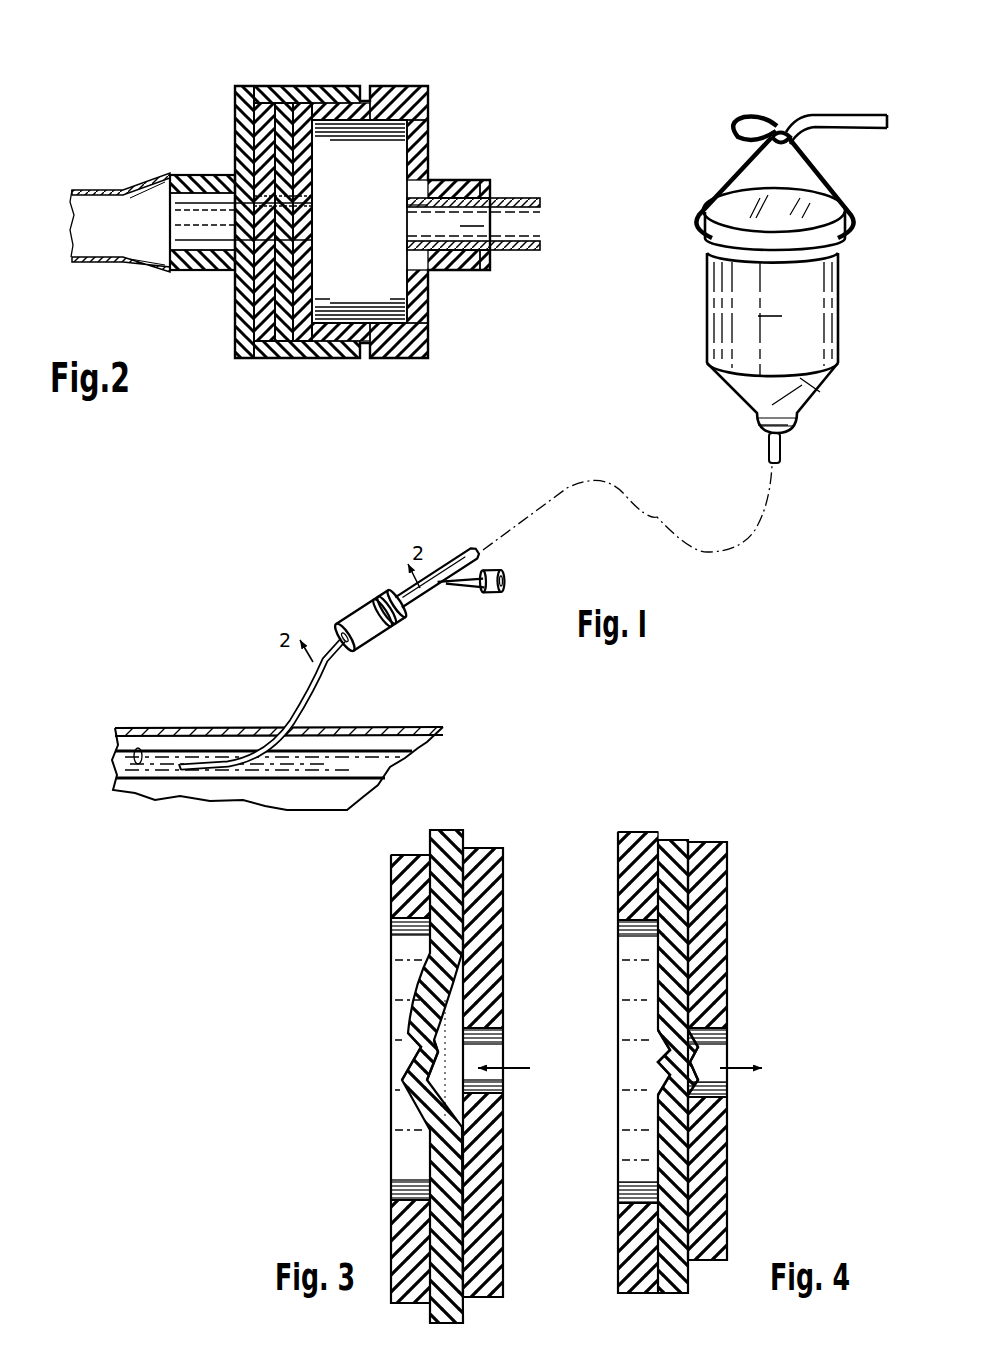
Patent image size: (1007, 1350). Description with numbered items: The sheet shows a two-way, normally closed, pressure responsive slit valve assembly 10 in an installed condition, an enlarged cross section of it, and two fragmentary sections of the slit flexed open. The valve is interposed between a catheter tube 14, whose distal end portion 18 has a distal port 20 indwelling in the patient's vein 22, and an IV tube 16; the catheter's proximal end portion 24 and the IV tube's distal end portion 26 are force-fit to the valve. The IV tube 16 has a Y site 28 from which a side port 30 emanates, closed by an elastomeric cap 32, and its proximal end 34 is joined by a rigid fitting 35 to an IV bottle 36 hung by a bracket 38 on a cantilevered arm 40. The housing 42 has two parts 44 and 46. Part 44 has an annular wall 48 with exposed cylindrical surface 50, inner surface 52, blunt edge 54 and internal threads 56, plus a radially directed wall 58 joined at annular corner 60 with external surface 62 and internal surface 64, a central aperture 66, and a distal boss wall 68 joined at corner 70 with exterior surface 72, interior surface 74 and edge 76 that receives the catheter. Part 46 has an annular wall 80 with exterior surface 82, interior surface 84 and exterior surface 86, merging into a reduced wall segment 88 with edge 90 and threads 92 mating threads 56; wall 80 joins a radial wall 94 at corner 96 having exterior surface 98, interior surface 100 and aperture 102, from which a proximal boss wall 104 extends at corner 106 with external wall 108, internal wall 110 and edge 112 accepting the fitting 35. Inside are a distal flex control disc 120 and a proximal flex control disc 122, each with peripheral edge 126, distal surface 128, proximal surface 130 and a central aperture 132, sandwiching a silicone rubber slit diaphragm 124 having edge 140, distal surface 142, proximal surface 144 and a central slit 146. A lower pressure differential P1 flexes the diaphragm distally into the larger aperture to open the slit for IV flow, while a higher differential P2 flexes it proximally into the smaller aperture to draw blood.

In FIG. 2, the slit valve assembly 10 is at (357, 65).
In FIG. 1, the slit valve assembly 10 is at (383, 648).
In FIG. 2, the catheter tube 14 is at (90, 188).
In FIG. 1, the catheter tube 14 is at (268, 770).
In FIG. 1, the IV tube 16 is at (781, 450).
In FIG. 1, the distal end portion 18 is at (186, 772).
In FIG. 1, the distal port 20 is at (172, 756).
In FIG. 1, the vein 22 is at (140, 730).
In FIG. 2, the proximal end portion 24 is at (200, 176).
In FIG. 1, the proximal end portion 24 is at (345, 625).
In FIG. 1, the distal end portion 26 is at (415, 612).
In FIG. 1, the Y site 28 is at (446, 565).
In FIG. 1, the side port 30 is at (472, 584).
In FIG. 1, the elastomeric cap 32 is at (505, 590).
In FIG. 1, the proximal end 34 is at (757, 428).
In FIG. 2, the rigid fitting 35 is at (472, 215).
In FIG. 1, the IV bottle 36 is at (774, 310).
In FIG. 1, the bracket 38 is at (850, 185).
In FIG. 1, the cantilevered arm 40 is at (836, 114).
In FIG. 2, the housing 42 is at (417, 368).
In FIG. 2, the housing part 44 is at (258, 85).
In FIG. 2, the housing part 46 is at (424, 85).
In FIG. 2, the annular wall 48 is at (306, 85).
In FIG. 2, the exposed cylindrical surface 50 is at (290, 85).
In FIG. 2, the inner surface 52 is at (290, 359).
In FIG. 2, the blunt edge 54 is at (380, 85).
In FIG. 2, the internal threads 56 is at (335, 359).
In FIG. 2, the radially directed wall 58 is at (236, 140).
In FIG. 2, the annular corner 60 is at (240, 90).
In FIG. 2, the external surface 62 is at (237, 105).
In FIG. 2, the internal surface 64 is at (237, 340).
In FIG. 2, the aperture 66 is at (175, 226).
In FIG. 2, the wall 68 is at (178, 208).
In FIG. 2, the annular corner 70 is at (248, 218).
In FIG. 2, the exterior wall surface 72 is at (172, 273).
In FIG. 2, the interior wall surface 74 is at (145, 181).
In FIG. 2, the blunt edge 76 is at (145, 268).
In FIG. 2, the annular wall 80 is at (430, 95).
In FIG. 2, the exterior cylindrical surface 82 is at (400, 85).
In FIG. 2, the interior surface 84 is at (320, 306).
In FIG. 2, the exterior surface 86 is at (375, 359).
In FIG. 2, the wall segment 88 is at (322, 128).
In FIG. 2, the blunt edge 90 is at (322, 145).
In FIG. 2, the threaded surface 92 is at (325, 85).
In FIG. 2, the radially directed wall 94 is at (432, 330).
In FIG. 2, the annular corner 96 is at (425, 359).
In FIG. 2, the exterior surface 98 is at (432, 345).
In FIG. 2, the interior surface 100 is at (432, 110).
In FIG. 2, the aperture 102 is at (432, 300).
In FIG. 2, the annular wall 104 is at (470, 181).
In FIG. 2, the corner 106 is at (432, 150).
In FIG. 2, the external cylindrical wall 108 is at (470, 271).
In FIG. 2, the internal cylindrical wall 110 is at (405, 215).
In FIG. 2, the blunt edge 112 is at (500, 198).
In FIG. 2, the distal flex control disc 120 is at (250, 295).
In FIG. 3, the distal flex control disc 120 is at (400, 856).
In FIG. 4, the distal flex control disc 120 is at (625, 832).
In FIG. 2, the proximal flex control disc 122 is at (300, 246).
In FIG. 3, the proximal flex control disc 122 is at (484, 849).
In FIG. 4, the proximal flex control disc 122 is at (712, 845).
In FIG. 2, the slit diaphragm 124 is at (300, 195).
In FIG. 3, the slit diaphragm 124 is at (447, 831).
In FIG. 4, the slit diaphragm 124 is at (673, 841).
In FIG. 2, the peripheral blunt edge 126 is at (243, 85).
In FIG. 2, the distal flat surface 128 is at (236, 120).
In FIG. 3, the distal flat surface 128 is at (400, 905).
In FIG. 4, the distal flat surface 128 is at (625, 915).
In FIG. 2, the proximal flat surface 130 is at (300, 264).
In FIG. 3, the proximal flat surface 130 is at (425, 878).
In FIG. 4, the proximal flat surface 130 is at (655, 885).
In FIG. 2, the aperture 132 is at (262, 200).
In FIG. 3, the aperture 132 is at (395, 928).
In FIG. 4, the aperture 132 is at (620, 927).
In FIG. 2, the edge 140 is at (270, 85).
In FIG. 2, the distal flat surface 142 is at (250, 100).
In FIG. 3, the distal flat surface 142 is at (395, 1205).
In FIG. 4, the distal flat surface 142 is at (620, 1230).
In FIG. 2, the proximal flat surface 144 is at (275, 359).
In FIG. 3, the proximal flat surface 144 is at (480, 1150).
In FIG. 4, the proximal flat surface 144 is at (710, 1160).
In FIG. 2, the slit 146 is at (300, 228).
In FIG. 3, the slit 146 is at (404, 1068).
In FIG. 4, the slit 146 is at (728, 1080).
In FIG. 3, the pressure differential P1 is at (518, 1071).
In FIG. 4, the pressure differential P2 is at (757, 1071).